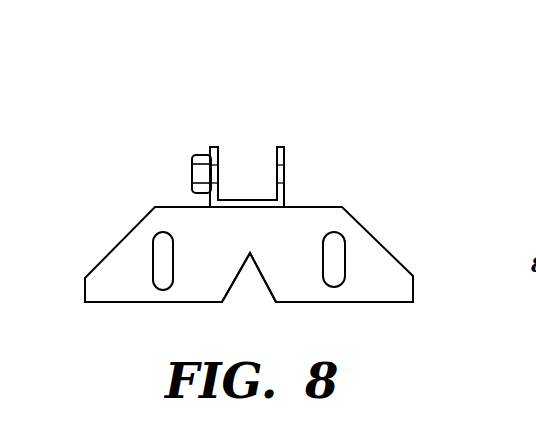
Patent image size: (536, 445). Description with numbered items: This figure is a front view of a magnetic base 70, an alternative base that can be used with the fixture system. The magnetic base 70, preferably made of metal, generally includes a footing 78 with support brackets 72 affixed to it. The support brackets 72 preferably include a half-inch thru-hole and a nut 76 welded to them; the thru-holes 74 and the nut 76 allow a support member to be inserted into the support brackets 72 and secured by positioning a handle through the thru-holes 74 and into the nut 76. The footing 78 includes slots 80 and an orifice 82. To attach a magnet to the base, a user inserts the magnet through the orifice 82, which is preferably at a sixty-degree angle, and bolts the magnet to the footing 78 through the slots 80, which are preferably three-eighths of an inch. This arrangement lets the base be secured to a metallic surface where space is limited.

The magnetic base 70 is at (255, 190).
The support brackets 72 is at (283, 156).
The thru-holes 74 is at (283, 173).
The nut 76 is at (162, 174).
The footing 78 is at (362, 257).
The slots 80 is at (163, 258).
The orifice 82 is at (250, 280).